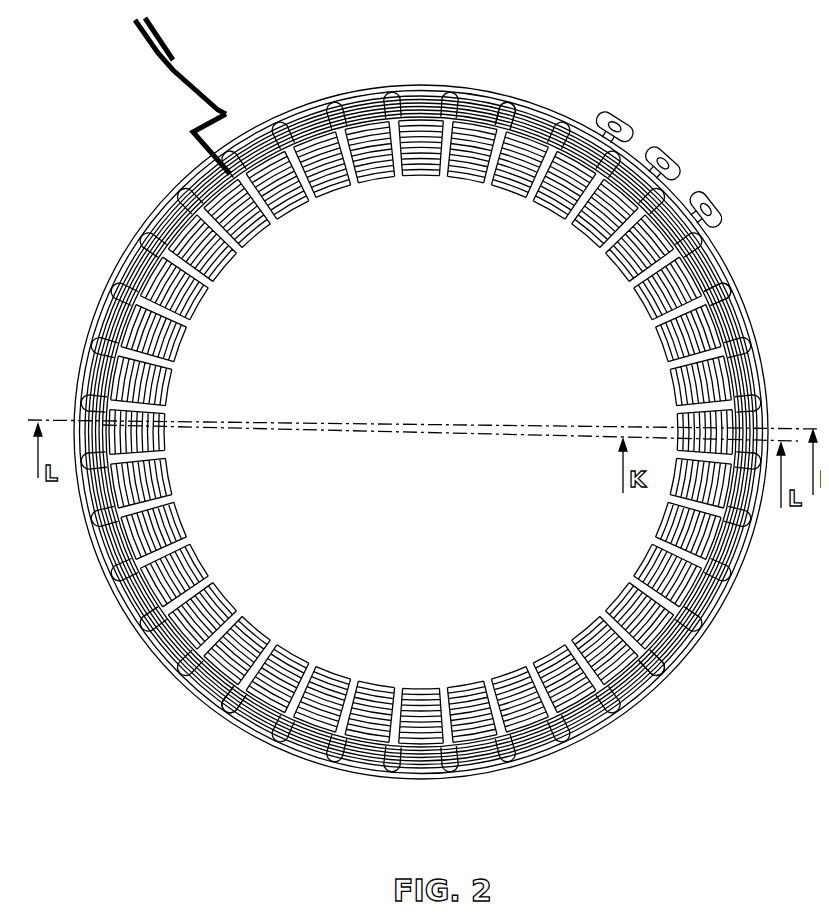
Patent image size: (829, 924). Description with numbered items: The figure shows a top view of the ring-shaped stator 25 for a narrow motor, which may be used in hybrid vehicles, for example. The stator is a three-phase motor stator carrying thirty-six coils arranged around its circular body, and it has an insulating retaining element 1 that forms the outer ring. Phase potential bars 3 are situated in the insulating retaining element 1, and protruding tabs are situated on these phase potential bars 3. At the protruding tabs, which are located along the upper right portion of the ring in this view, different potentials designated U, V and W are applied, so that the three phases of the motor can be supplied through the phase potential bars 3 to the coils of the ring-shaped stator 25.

The insulating retaining element 1 is at (764, 372).
The phase potential bars 3 is at (108, 580).
The ring-shaped stator 25 is at (78, 200).